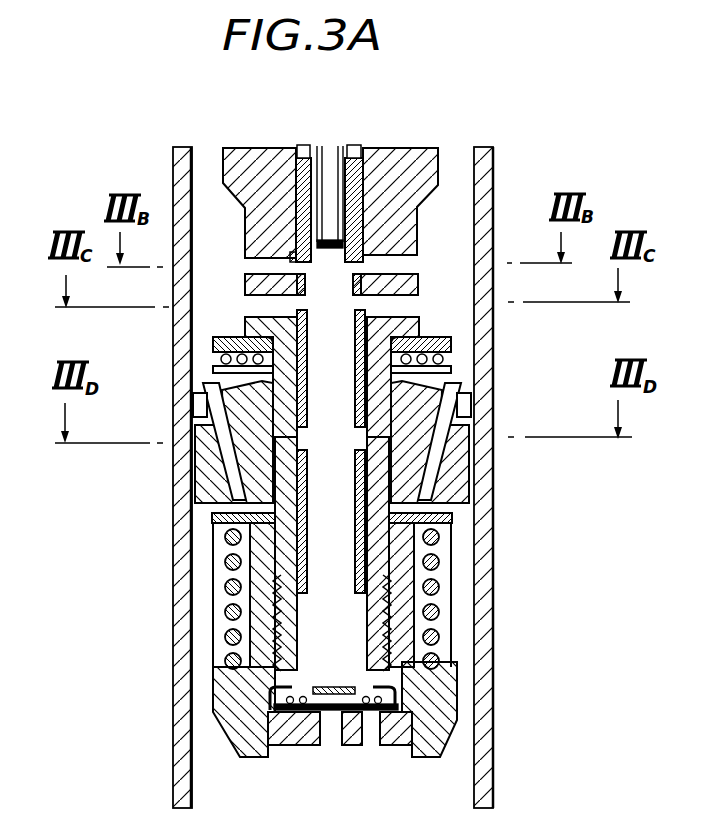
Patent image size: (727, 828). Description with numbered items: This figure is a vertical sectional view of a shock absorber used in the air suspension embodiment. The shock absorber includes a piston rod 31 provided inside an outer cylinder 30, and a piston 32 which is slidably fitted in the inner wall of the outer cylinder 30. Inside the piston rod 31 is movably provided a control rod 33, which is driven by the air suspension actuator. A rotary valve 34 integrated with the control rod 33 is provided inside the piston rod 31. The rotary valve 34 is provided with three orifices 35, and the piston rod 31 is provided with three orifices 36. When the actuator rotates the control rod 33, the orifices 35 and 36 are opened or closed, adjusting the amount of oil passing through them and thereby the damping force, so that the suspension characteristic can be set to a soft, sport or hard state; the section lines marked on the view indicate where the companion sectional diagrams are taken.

The outer cylinder 30 is at (487, 185).
The piston rod 31 is at (243, 198).
The piston 32 is at (205, 387).
The control rod 33 is at (336, 146).
The rotary valve 34 is at (412, 152).
The orifices 35 is at (302, 441).
The orifices 36 is at (390, 437).